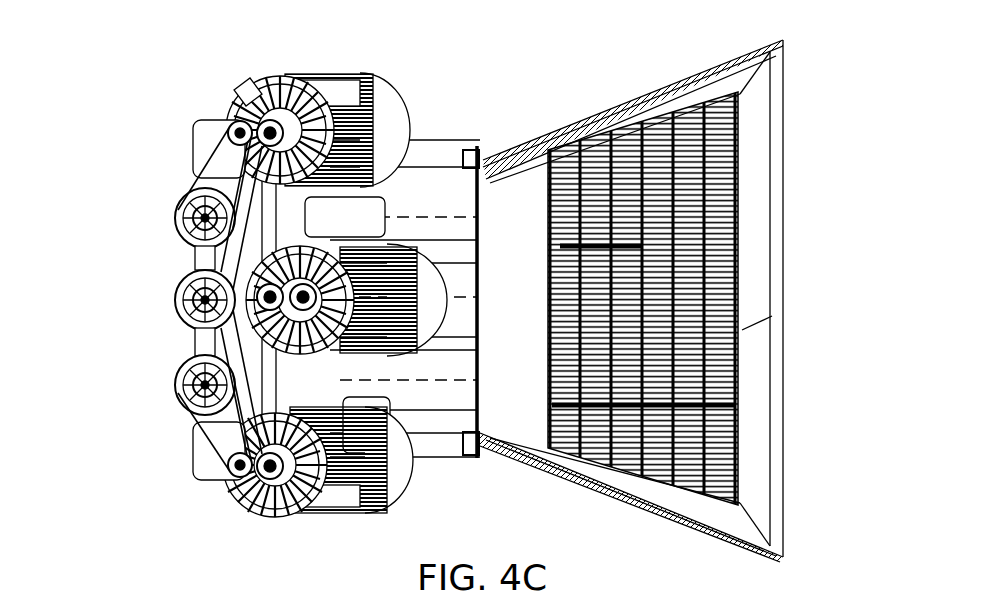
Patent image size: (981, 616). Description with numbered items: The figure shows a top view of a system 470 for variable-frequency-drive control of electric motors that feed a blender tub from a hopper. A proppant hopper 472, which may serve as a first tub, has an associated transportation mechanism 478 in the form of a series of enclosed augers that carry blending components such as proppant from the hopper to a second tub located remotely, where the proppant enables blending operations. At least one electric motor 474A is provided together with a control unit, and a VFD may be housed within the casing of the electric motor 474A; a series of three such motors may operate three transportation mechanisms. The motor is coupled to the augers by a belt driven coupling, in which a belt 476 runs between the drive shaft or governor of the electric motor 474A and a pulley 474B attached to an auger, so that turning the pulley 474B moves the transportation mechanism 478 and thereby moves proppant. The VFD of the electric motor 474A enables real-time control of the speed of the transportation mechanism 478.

The system 470 is at (480, 292).
The proppant hopper 472 is at (637, 73).
The electric motor 474A is at (233, 73).
The pulley 474B is at (177, 207).
The belt 476 is at (207, 148).
The transportation mechanism 478 is at (438, 186).